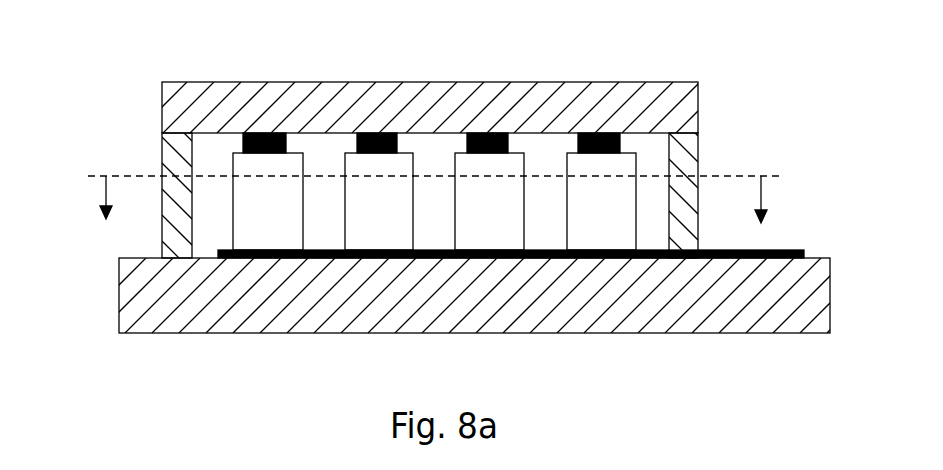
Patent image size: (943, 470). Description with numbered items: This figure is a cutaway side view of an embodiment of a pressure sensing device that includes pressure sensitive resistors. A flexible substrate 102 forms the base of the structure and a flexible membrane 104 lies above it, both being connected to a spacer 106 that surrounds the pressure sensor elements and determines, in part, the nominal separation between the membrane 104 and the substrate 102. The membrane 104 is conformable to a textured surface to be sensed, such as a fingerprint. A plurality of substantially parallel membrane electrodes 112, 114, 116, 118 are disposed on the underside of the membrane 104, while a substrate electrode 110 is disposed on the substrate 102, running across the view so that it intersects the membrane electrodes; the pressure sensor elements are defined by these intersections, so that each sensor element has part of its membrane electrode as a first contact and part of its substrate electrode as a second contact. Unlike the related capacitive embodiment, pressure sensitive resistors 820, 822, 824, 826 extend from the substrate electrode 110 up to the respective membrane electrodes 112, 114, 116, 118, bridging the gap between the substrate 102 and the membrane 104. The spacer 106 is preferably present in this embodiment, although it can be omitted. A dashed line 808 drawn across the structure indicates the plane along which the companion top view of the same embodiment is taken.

The flexible substrate 102 is at (135, 302).
The flexible membrane 104 is at (175, 100).
The spacer 106 is at (170, 157).
The substrate electrode 110 is at (780, 250).
The membrane electrode 112 is at (250, 133).
The membrane electrode 114 is at (358, 133).
The membrane electrode 116 is at (474, 133).
The membrane electrode 118 is at (586, 133).
The cutaway line 808 is at (772, 176).
The pressure sensitive resistor 820 is at (256, 233).
The pressure sensitive resistor 822 is at (376, 232).
The pressure sensitive resistor 824 is at (490, 232).
The pressure sensitive resistor 826 is at (603, 225).